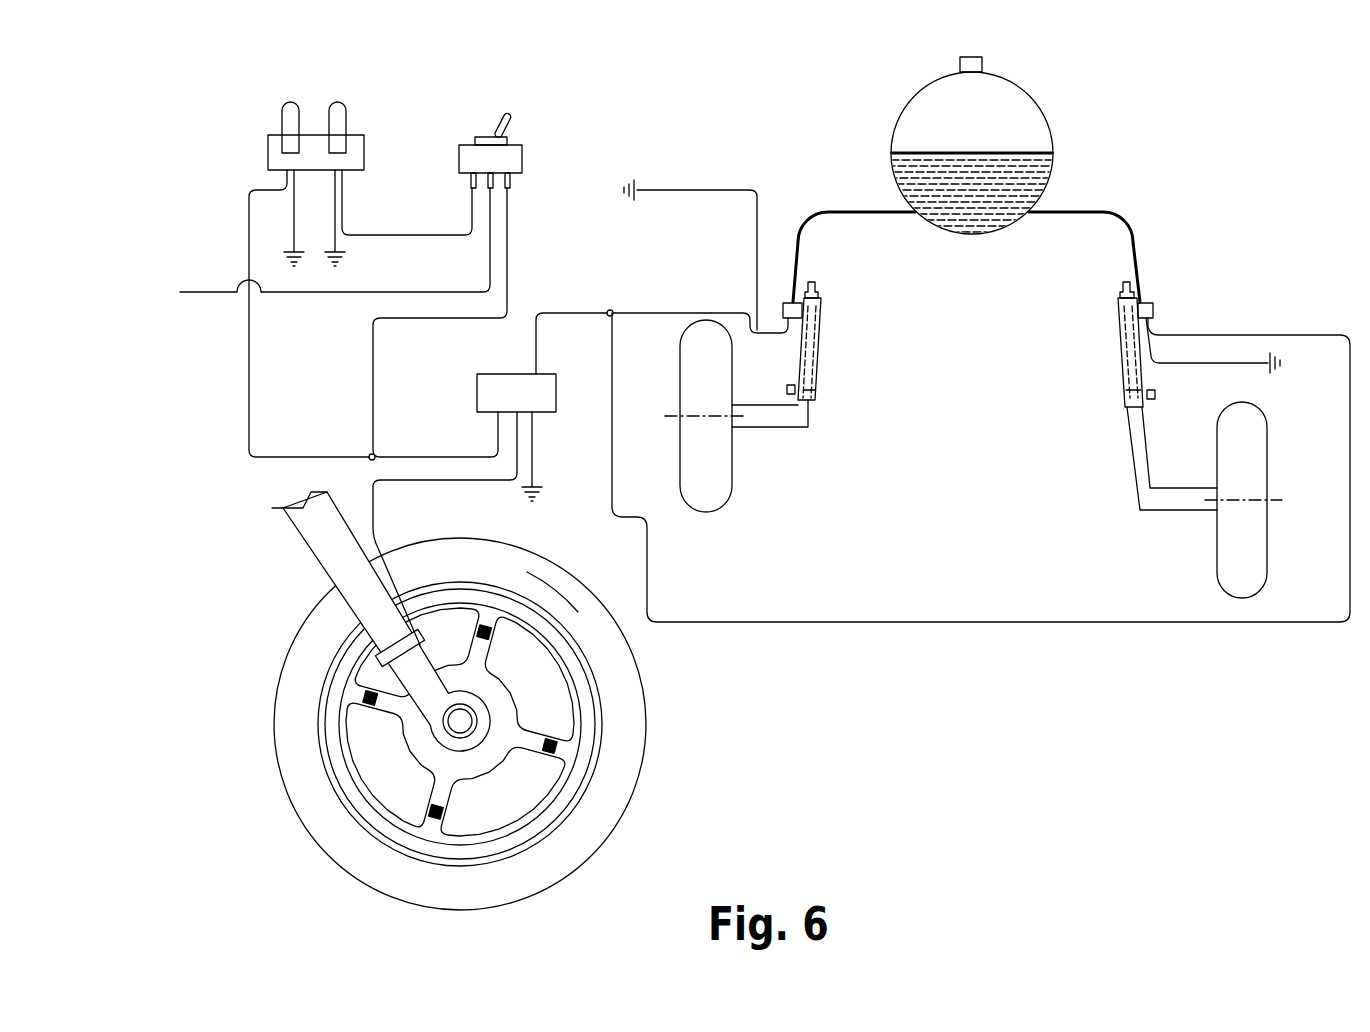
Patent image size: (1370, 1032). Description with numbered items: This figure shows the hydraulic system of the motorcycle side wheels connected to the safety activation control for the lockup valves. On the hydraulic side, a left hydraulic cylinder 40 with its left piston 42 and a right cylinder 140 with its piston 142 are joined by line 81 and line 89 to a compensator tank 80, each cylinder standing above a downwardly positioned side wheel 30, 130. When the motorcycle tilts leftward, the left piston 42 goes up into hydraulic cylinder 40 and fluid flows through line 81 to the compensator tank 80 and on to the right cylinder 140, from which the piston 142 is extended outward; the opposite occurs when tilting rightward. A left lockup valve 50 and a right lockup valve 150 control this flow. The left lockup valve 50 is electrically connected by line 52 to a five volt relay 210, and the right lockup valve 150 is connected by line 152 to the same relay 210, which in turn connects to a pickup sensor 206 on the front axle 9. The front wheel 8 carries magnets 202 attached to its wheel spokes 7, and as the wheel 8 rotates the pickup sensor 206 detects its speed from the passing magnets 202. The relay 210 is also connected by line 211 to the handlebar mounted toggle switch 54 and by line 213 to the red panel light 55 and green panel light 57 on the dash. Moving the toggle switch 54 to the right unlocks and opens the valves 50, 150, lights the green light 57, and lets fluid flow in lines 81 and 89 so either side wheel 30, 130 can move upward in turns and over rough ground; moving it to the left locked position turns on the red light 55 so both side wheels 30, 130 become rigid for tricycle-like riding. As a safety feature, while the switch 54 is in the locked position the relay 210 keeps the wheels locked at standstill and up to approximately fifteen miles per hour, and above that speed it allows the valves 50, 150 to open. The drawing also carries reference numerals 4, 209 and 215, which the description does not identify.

The sensor magnets 4 is at (572, 750).
The wheel spokes 7 is at (438, 795).
The front wheel 8 is at (293, 737).
The front axle 9 is at (428, 690).
The side wheel 30 is at (712, 497).
The hydraulic cylinder 40 is at (820, 342).
The left piston 42 is at (817, 362).
The left lockup valve 50 is at (818, 302).
The line 52 is at (662, 310).
The toggle switch 54 is at (507, 158).
The red panel light 55 is at (288, 113).
The green panel light 57 is at (337, 112).
The compensator tank 80 is at (890, 150).
The line 81 is at (843, 212).
The line 89 is at (1108, 210).
The side wheel 130 is at (1227, 572).
The right cylinder 140 is at (1120, 340).
The piston 142 is at (1135, 465).
The right lockup valve 150 is at (1158, 303).
The line 152 is at (1080, 623).
The magnets 202 is at (440, 815).
The pickup sensor 206 is at (407, 645).
The sensor wire 209 is at (375, 513).
The relay 210 is at (508, 388).
The line 211 is at (370, 397).
The line 213 is at (376, 235).
The power lead 215 is at (202, 292).